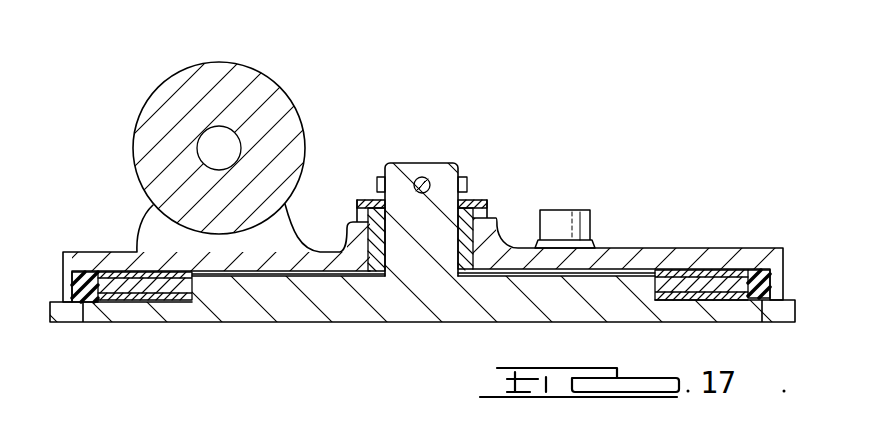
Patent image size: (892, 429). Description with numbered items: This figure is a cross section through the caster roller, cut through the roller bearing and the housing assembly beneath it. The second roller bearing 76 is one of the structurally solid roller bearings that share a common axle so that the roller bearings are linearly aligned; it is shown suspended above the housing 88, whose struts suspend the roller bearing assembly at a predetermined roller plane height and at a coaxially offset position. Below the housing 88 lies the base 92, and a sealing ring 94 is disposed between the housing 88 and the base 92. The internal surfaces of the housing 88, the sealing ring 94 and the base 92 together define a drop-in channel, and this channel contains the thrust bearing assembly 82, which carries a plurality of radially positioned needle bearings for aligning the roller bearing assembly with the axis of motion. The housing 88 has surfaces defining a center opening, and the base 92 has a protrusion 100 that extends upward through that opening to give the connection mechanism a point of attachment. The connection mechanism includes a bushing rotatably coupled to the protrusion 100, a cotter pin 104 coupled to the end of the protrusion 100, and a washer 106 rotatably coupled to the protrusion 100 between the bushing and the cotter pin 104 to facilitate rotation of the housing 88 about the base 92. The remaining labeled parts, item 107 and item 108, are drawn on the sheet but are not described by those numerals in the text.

The second roller bearing 76 is at (218, 62).
The thrust bearing assembly 82 is at (675, 298).
The housing 88 is at (63, 255).
The base 92 is at (373, 322).
The sealing ring 94 is at (75, 297).
The protrusion 100 is at (421, 162).
The cotter pin 104 is at (378, 183).
The washer 106 is at (360, 201).
The washer 107 is at (487, 209).
The pin 108 is at (575, 210).